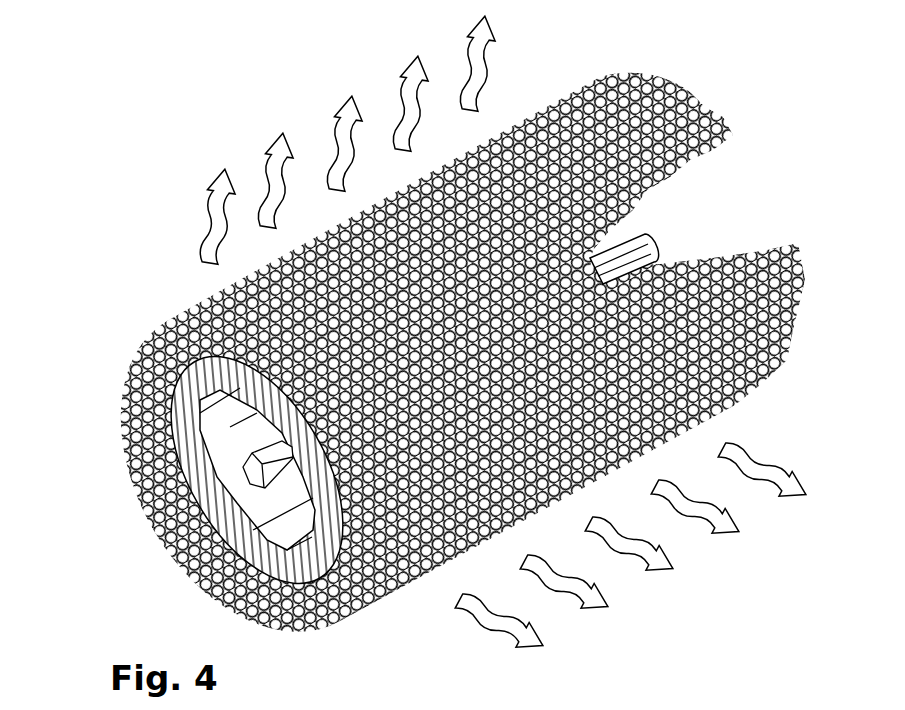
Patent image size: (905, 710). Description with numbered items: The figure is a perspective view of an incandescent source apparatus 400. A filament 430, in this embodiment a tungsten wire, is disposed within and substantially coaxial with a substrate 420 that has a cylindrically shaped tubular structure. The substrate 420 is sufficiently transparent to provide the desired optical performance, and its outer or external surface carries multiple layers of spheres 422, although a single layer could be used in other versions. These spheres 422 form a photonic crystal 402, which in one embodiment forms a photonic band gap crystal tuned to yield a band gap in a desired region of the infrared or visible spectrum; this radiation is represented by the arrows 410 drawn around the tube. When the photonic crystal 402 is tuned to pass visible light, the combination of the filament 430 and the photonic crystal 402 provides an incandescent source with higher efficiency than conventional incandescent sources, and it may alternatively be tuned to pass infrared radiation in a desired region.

The apparatus 400 is at (695, 70).
The photonic crystal 402 is at (102, 433).
The arrows 410 is at (494, 30).
The substrate 420 is at (188, 388).
The spheres 422 is at (718, 120).
The filament 430 is at (642, 244).